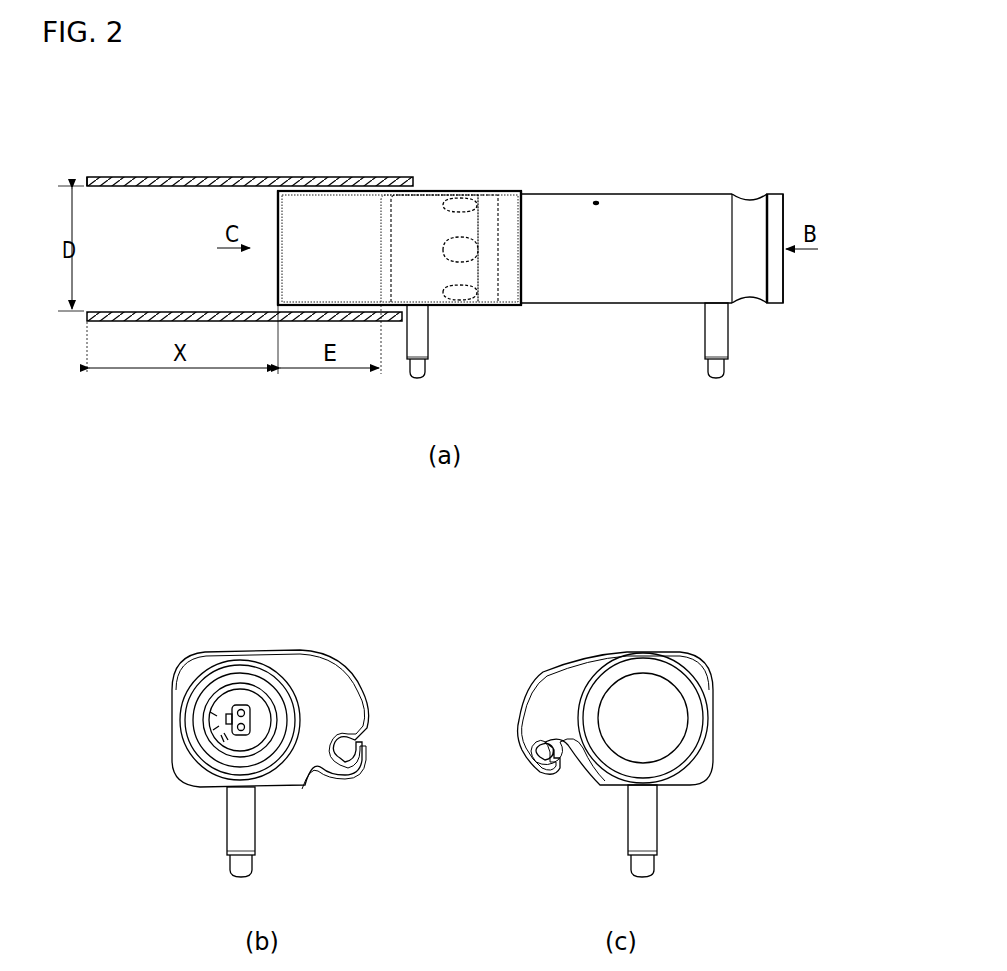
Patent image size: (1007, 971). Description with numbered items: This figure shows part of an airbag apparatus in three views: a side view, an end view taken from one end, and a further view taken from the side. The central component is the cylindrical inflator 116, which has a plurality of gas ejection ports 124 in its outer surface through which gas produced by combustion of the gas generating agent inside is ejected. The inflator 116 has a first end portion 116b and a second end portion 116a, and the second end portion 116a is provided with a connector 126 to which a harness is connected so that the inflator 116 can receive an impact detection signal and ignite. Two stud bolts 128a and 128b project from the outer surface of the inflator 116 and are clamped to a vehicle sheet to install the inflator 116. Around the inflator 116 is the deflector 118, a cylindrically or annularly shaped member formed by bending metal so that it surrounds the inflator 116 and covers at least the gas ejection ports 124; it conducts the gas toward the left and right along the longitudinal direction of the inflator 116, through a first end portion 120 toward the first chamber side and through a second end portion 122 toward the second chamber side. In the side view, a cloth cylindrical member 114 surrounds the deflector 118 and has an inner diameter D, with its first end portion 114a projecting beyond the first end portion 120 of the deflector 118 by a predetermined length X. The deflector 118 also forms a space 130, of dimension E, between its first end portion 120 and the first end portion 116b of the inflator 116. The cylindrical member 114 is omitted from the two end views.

The cylindrical member 114 is at (183, 177).
The first end portion 114a is at (86, 177).
The inflator 116 is at (632, 194).
The second end portion 116a is at (784, 280).
The first end portion 116b is at (381, 251).
The deflector 118 is at (428, 215).
The first end portion 120 is at (278, 283).
The second end portion 122 is at (523, 264).
The gas ejection ports 124 is at (470, 245).
The connector 126 is at (241, 705).
The stud bolt 128a is at (710, 343).
The stud bolt 128b is at (425, 345).
The space 130 is at (332, 212).